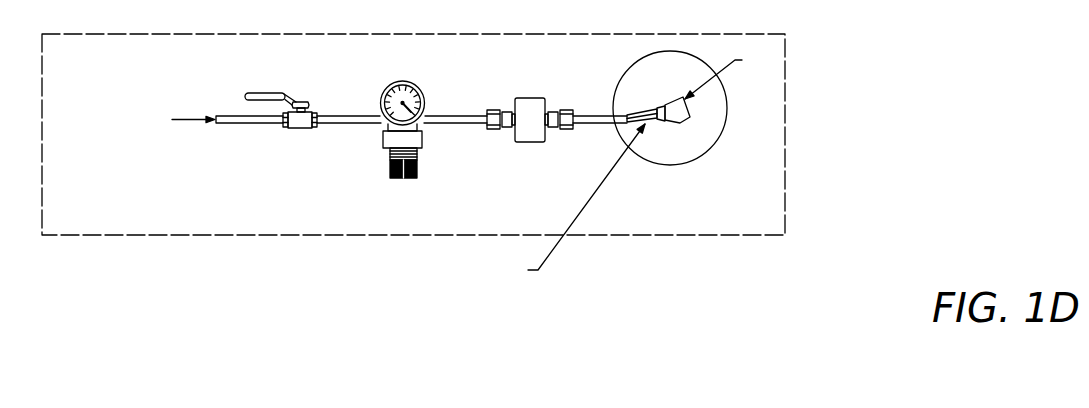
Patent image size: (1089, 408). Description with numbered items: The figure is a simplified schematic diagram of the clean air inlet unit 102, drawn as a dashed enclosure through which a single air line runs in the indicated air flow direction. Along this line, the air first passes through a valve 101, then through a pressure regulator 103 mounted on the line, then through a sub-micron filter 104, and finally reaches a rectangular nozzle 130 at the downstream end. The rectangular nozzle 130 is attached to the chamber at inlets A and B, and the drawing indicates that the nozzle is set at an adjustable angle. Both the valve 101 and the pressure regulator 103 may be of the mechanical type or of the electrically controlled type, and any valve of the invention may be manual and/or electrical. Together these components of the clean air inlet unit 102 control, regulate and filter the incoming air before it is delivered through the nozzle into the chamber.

The valve 101 is at (293, 131).
The clean air inlet unit 102 is at (812, 98).
The pressure regulator 103 is at (408, 180).
The sub-micron filter 104 is at (530, 144).
The rectangular nozzle 130 is at (680, 127).